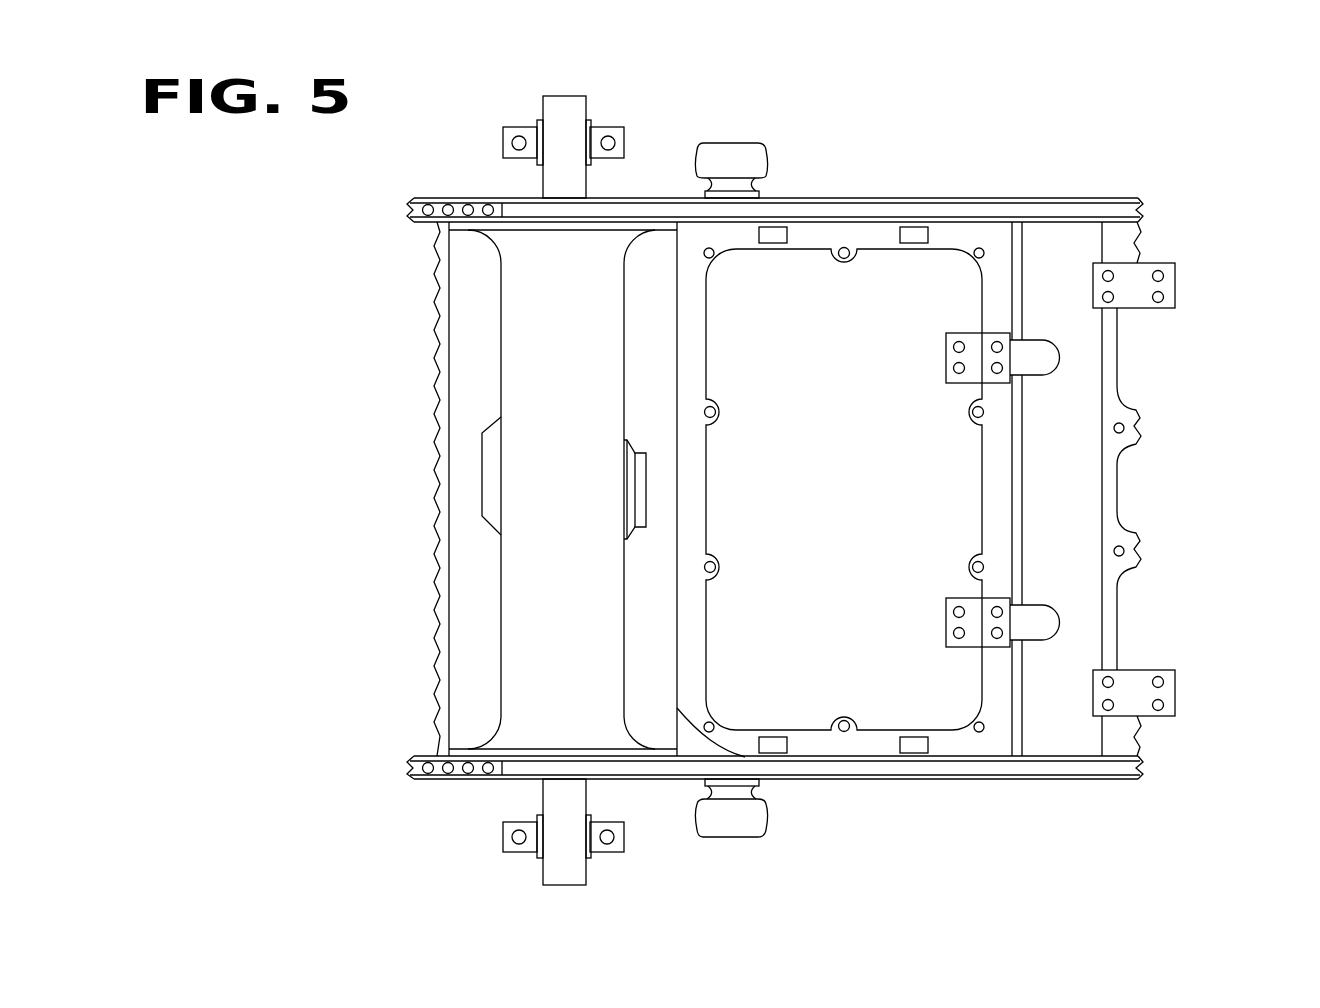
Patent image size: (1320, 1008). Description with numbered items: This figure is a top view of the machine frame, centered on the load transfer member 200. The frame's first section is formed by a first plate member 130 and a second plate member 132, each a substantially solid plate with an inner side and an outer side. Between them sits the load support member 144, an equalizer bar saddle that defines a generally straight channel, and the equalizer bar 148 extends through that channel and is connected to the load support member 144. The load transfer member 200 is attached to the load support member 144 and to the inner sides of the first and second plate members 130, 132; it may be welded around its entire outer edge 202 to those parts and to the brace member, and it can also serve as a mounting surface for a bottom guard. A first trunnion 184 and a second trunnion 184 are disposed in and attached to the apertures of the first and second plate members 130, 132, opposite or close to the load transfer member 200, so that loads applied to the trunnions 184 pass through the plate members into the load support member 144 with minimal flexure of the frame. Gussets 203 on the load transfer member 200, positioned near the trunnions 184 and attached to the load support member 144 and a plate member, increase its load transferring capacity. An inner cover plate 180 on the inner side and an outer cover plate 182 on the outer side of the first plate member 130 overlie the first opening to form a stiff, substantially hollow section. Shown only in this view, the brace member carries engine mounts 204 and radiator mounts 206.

The first plate member 130 is at (697, 769).
The second plate member 132 is at (632, 210).
The load support member 144 is at (570, 337).
The equalizer bar 148 is at (554, 111).
The inner cover plate 180 is at (953, 222).
The outer cover plate 182 is at (778, 372).
The trunnion 184 is at (718, 141).
The load transfer member 200 is at (879, 236).
The outer edge 202 is at (677, 325).
The gussets 203 is at (708, 231).
The engine mounts 204 is at (975, 342).
The radiator mounts 206 is at (1139, 297).